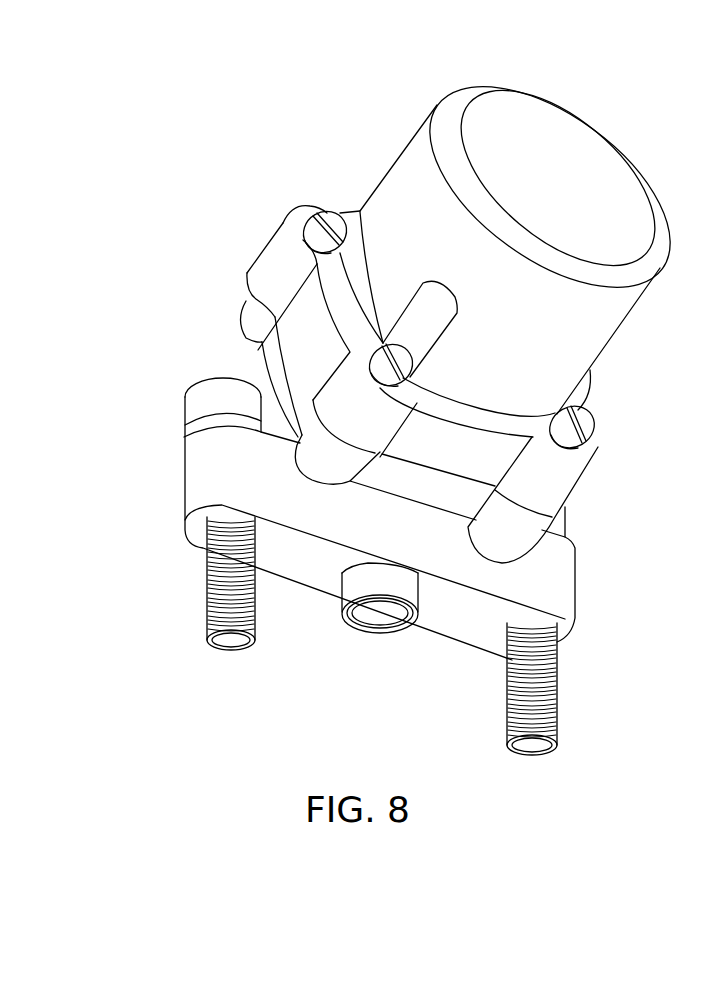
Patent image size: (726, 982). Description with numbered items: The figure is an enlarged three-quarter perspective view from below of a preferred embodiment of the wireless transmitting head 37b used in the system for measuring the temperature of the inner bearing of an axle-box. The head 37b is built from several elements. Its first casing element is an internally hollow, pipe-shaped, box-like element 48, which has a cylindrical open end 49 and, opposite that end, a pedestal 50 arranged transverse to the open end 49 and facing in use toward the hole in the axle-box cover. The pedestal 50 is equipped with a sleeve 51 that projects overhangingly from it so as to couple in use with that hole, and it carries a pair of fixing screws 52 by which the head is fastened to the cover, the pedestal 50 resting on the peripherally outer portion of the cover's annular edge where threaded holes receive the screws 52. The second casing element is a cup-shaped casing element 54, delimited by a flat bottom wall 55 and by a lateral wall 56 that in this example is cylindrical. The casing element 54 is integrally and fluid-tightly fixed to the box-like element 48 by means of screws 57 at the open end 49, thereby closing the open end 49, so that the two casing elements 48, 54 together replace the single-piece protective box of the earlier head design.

The wireless transmitting head 37b is at (284, 173).
The second cup-shaped casing element 54 is at (414, 127).
The flat bottom wall 55 is at (590, 170).
The lateral wall 56 is at (605, 320).
The screws 57 is at (330, 213).
The cylindrical open end 49 is at (413, 488).
The box-like element 48 is at (569, 518).
The pedestal 50 is at (563, 580).
The sleeve 51 is at (413, 596).
The fixing screws 52 is at (208, 594).